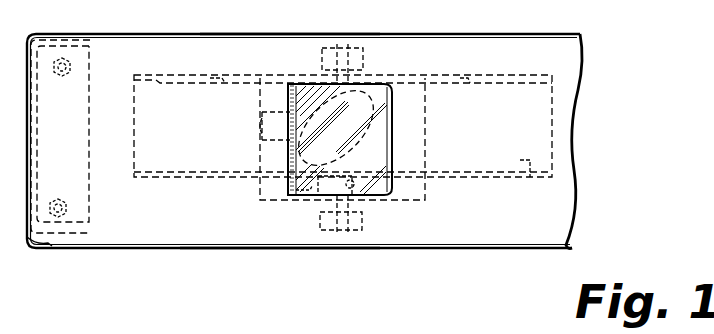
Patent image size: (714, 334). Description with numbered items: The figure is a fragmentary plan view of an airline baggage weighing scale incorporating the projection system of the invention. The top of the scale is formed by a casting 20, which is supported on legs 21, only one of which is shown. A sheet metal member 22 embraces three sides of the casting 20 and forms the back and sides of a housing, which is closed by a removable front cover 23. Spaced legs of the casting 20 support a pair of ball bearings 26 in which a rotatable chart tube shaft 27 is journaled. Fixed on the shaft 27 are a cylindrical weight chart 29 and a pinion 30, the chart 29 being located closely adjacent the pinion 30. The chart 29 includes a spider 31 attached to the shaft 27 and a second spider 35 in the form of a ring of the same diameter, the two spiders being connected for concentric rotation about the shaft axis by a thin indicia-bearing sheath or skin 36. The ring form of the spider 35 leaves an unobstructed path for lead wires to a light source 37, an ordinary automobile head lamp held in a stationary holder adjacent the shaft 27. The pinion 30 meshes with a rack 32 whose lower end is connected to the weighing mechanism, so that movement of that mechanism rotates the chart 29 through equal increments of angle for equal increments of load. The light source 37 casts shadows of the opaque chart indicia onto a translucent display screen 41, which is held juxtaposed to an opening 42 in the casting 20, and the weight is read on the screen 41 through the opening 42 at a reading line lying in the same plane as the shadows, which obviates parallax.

The casting 20 is at (599, 101).
The legs 21 is at (88, 232).
The sheet metal member 22 is at (290, 34).
The removable front cover 23 is at (250, 249).
The ball bearings 26 is at (366, 65).
The chart tube shaft 27 is at (342, 133).
The cylindrical weight chart 29 is at (497, 190).
The pinion 30 is at (300, 199).
The spider 31 is at (514, 86).
The rack 32 is at (376, 190).
The second spider 35 is at (527, 172).
The indicia-bearing sheath 36 is at (136, 152).
The light source 37 is at (360, 118).
The display screen 41 is at (428, 165).
The opening 42 is at (392, 148).